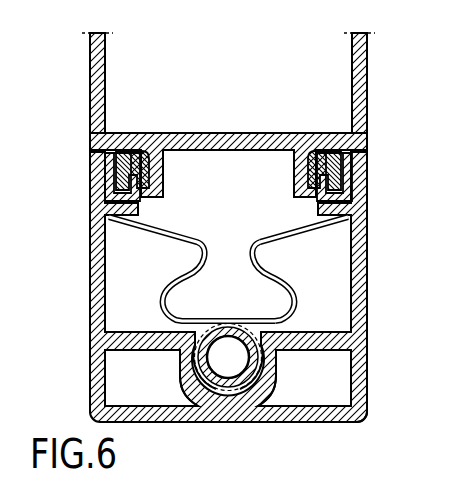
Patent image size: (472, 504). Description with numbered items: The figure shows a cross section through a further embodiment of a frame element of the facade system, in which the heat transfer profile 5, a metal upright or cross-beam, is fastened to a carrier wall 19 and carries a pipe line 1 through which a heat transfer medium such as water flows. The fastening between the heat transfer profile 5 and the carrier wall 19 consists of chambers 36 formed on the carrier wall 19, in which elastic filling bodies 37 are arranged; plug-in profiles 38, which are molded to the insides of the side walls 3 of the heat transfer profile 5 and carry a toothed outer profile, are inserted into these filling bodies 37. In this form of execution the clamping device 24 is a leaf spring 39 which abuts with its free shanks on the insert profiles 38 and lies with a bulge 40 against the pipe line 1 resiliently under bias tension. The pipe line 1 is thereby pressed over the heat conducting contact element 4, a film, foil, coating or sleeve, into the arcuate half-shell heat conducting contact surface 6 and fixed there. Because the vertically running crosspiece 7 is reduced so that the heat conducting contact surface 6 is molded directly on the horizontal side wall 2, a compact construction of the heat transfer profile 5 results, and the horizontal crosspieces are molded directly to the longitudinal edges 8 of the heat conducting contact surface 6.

The pipe line 1 is at (213, 386).
The horizontal side wall 2 is at (150, 422).
The side walls 3 is at (91, 258).
The heat conducting contact element 4 is at (195, 370).
The heat transfer profile 5 is at (383, 383).
The heat conducting contact surface 6 is at (262, 384).
The crosspieces 7 is at (119, 351).
The longitudinal edges 8 is at (187, 340).
The carrier wall 19 is at (219, 133).
The clamping device 24 is at (228, 258).
The chambers 36 is at (137, 150).
The filling bodies 37 is at (128, 170).
The plug-in profiles 38 is at (128, 155).
The leaf spring 39 is at (291, 241).
The bulge 40 is at (298, 308).